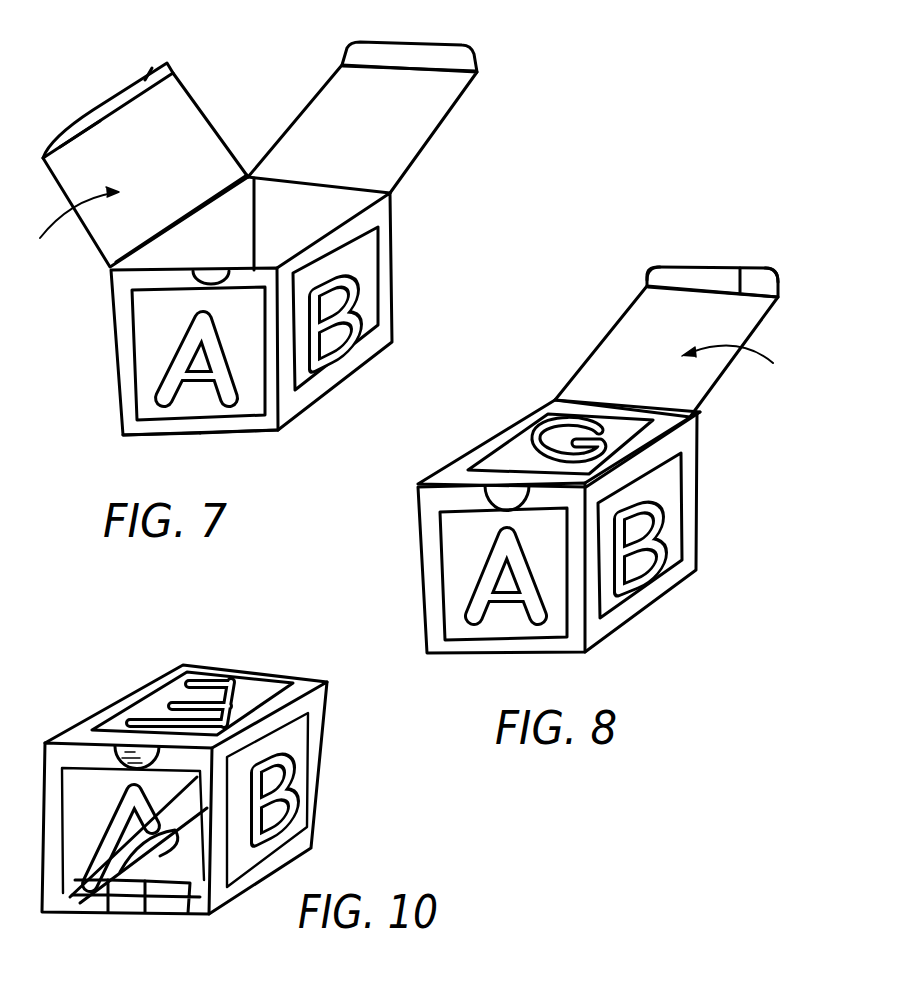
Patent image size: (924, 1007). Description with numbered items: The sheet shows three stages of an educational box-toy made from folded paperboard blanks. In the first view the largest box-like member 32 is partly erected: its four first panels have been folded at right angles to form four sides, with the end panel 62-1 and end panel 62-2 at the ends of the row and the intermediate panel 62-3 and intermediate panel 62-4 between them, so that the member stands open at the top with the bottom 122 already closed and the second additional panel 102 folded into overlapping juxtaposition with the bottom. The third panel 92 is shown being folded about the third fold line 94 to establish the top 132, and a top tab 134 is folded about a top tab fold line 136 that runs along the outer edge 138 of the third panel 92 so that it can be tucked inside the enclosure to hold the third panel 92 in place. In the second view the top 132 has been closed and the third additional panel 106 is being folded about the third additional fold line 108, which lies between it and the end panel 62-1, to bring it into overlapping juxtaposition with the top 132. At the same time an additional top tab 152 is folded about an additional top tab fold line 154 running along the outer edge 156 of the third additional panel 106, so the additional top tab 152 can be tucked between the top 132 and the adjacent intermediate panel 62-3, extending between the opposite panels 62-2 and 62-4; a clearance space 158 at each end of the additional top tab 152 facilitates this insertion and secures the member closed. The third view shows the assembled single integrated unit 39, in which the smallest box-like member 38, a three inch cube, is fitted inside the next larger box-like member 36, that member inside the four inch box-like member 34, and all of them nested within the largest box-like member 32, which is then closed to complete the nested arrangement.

In FIG. 10, the box-like member 32 is at (178, 789).
In FIG. 10, the box-like member 34 is at (95, 925).
In FIG. 10, the box-like member 36 is at (135, 928).
In FIG. 10, the box-like member 38 is at (184, 923).
In FIG. 10, the single integrated unit 39 is at (190, 687).
In FIG. 7, the end panel 62-1 is at (376, 311).
In FIG. 8, the end panel 62-1 is at (681, 532).
In FIG. 7, the end panel 62-2 is at (161, 351).
In FIG. 8, the end panel 62-2 is at (467, 568).
In FIG. 7, the intermediate panel 62-3 is at (157, 353).
In FIG. 8, the intermediate panel 62-3 is at (456, 574).
In FIG. 7, the intermediate panel 62-4 is at (384, 292).
In FIG. 8, the intermediate panel 62-4 is at (644, 558).
In FIG. 7, the third panel 92 is at (146, 162).
In FIG. 8, the third panel 92 is at (559, 443).
In FIG. 7, the third fold line 94 is at (181, 218).
In FIG. 7, the second additional panel 102 is at (161, 464).
In FIG. 8, the third additional panel 106 is at (666, 356).
In FIG. 8, the third additional fold line 108 is at (627, 381).
In FIG. 7, the bottom 122 is at (239, 458).
In FIG. 8, the top 132 is at (560, 413).
In FIG. 7, the top tab 134 is at (108, 110).
In FIG. 7, the top tab fold line 136 is at (110, 137).
In FIG. 7, the outer edge 138 is at (162, 51).
In FIG. 8, the additional top tab 152 is at (712, 235).
In FIG. 8, the additional top tab fold line 154 is at (712, 309).
In FIG. 8, the outer edge 156 is at (760, 235).
In FIG. 8, the clearance space 158 is at (720, 254).